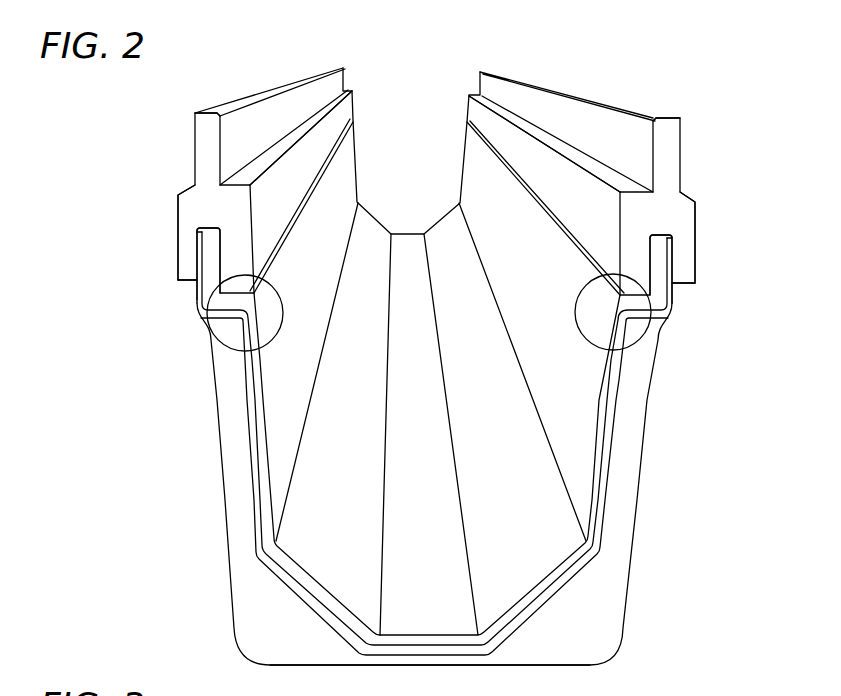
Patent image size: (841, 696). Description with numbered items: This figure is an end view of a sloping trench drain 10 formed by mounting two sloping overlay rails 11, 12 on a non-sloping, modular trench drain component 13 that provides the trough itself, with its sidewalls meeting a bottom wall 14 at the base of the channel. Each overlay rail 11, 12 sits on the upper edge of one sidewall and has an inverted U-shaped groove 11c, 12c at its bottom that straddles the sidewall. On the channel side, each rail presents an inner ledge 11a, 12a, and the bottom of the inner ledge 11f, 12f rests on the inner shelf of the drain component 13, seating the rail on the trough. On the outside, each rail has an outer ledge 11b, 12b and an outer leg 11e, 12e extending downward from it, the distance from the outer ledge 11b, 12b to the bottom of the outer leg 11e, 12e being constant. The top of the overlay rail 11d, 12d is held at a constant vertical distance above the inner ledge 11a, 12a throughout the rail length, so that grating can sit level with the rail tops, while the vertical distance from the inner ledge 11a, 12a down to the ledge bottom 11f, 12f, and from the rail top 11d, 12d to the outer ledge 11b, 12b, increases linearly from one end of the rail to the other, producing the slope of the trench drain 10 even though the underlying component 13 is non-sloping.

The sloping trench drain 10 is at (174, 538).
The overlay rail 11 is at (214, 217).
The inner ledge 11a is at (271, 167).
The outer ledge 11b is at (193, 190).
The groove of left rail 11c is at (197, 231).
The top of the overlay rail 11d is at (207, 112).
The outer leg 11e is at (177, 281).
The bottom of the inner ledge 11f is at (218, 340).
The overlay rail 12 is at (636, 206).
The inner ledge 12a is at (592, 173).
The outer ledge 12b is at (683, 190).
The groove of right rail 12c is at (673, 236).
The top of the overlay rail 12d is at (668, 117).
The outer leg 12e is at (695, 284).
The bottom of the inner ledge 12f is at (640, 342).
The non-sloping modular trench drain component 13 is at (221, 485).
The trough bottom wall 14 is at (558, 666).